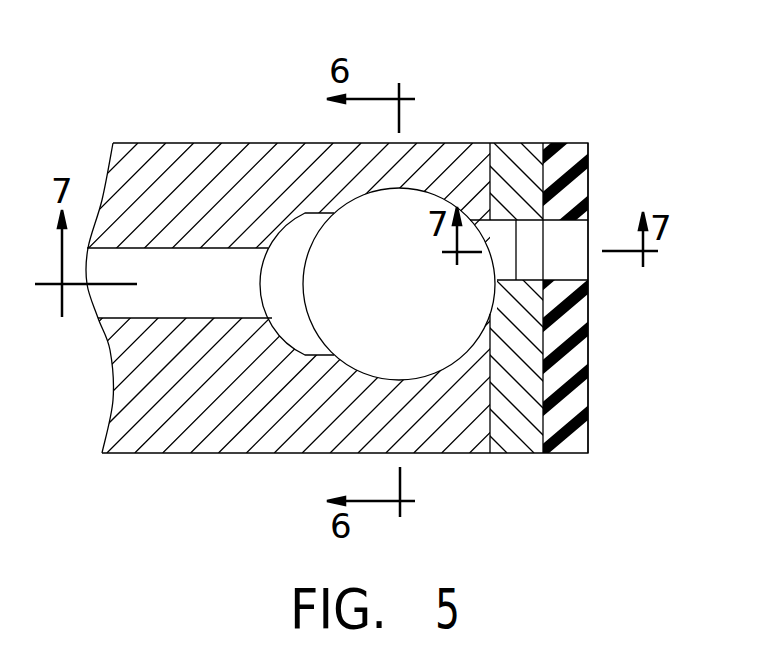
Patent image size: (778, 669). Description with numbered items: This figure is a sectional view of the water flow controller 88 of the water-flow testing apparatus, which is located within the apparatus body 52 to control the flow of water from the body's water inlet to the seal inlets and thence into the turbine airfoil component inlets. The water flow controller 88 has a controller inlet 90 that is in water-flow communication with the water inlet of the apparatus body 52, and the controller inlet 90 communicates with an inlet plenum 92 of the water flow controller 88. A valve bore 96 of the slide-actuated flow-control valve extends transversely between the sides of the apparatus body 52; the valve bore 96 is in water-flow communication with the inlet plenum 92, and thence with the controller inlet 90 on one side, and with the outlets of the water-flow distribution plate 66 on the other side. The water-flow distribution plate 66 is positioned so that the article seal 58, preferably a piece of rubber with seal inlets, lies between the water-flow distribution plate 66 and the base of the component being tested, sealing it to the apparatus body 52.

The water flow controller 88 is at (389, 263).
The apparatus body 52 is at (213, 456).
The controller inlet 90 is at (153, 250).
The inlet plenum 92 is at (320, 334).
The valve bore 96 is at (350, 205).
The water-flow distribution plate 66 is at (513, 445).
The article seal 58 is at (580, 442).